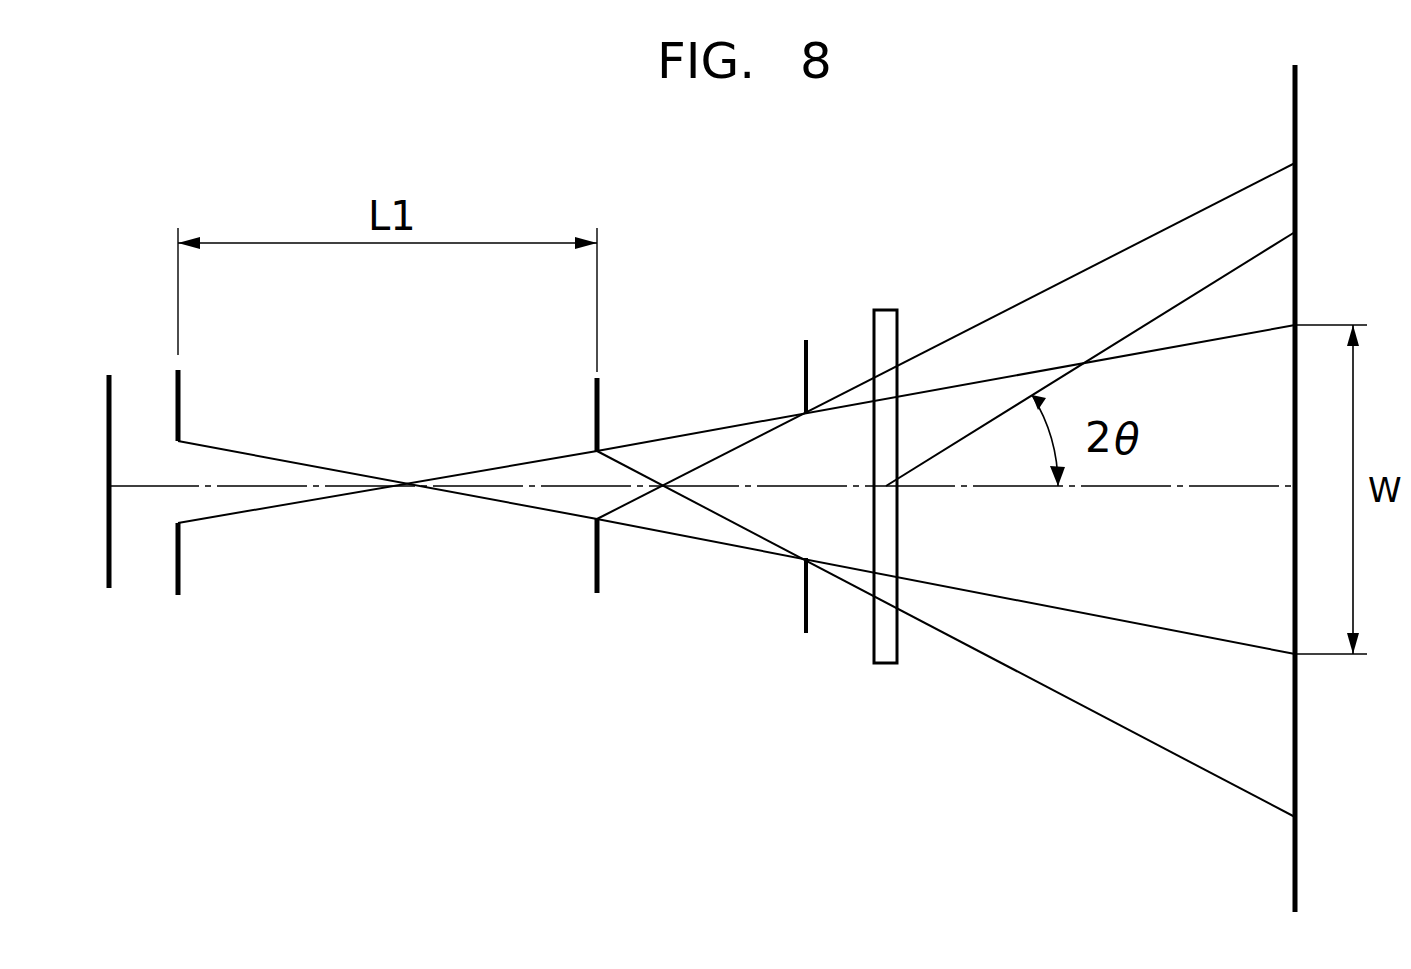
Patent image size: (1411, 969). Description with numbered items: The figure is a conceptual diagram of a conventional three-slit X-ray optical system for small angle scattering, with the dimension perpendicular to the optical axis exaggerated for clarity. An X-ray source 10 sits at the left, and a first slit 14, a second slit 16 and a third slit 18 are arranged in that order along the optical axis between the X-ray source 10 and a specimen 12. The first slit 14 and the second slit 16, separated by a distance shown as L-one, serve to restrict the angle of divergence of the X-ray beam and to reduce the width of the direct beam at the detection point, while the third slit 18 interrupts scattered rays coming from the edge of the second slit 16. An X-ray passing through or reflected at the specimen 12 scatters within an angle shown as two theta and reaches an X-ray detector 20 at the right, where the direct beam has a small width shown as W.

The X-ray source 10 is at (109, 566).
The specimen 12 is at (884, 663).
The first slit 14 is at (178, 573).
The second slit 16 is at (597, 572).
The third slit 18 is at (805, 607).
The X-ray detector 20 is at (1294, 862).